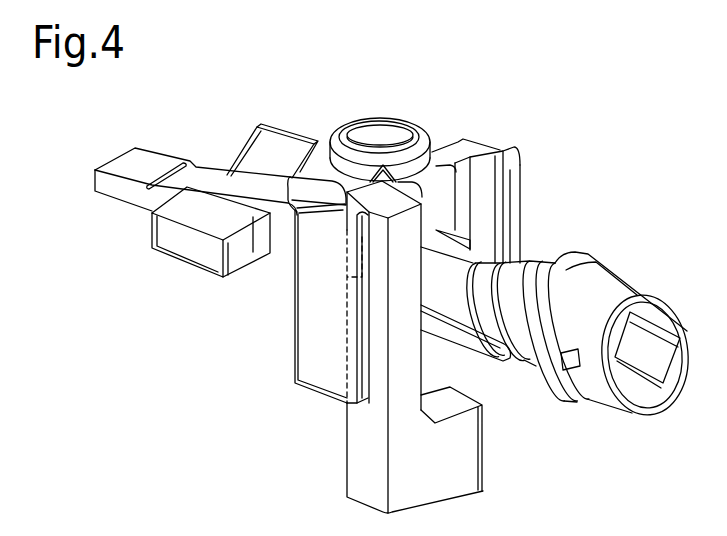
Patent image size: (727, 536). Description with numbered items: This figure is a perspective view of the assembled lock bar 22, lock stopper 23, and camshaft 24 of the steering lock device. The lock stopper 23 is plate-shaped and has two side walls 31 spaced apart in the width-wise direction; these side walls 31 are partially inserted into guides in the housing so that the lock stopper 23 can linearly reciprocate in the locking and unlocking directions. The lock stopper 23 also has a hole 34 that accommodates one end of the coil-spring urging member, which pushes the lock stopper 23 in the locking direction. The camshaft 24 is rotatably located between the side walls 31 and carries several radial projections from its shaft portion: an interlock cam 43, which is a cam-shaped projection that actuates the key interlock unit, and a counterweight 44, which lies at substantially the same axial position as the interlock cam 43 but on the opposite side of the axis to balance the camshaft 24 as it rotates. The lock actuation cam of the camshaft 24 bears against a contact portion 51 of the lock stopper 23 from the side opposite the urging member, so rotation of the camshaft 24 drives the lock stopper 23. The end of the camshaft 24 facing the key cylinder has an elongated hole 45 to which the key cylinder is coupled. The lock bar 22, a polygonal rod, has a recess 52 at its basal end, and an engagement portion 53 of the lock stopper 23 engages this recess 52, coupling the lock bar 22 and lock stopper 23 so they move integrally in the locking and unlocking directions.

The lock bar 22 is at (345, 468).
The lock stopper 23 is at (295, 348).
The camshaft 24 is at (473, 263).
The side walls 31 is at (315, 377).
The hole 34 is at (381, 129).
The interlock cam 43 is at (288, 130).
The counterweight 44 is at (187, 263).
The elongated hole 45 is at (641, 325).
The contact portion 51 is at (324, 166).
The recess 52 is at (350, 241).
The engagement portion 53 is at (360, 267).